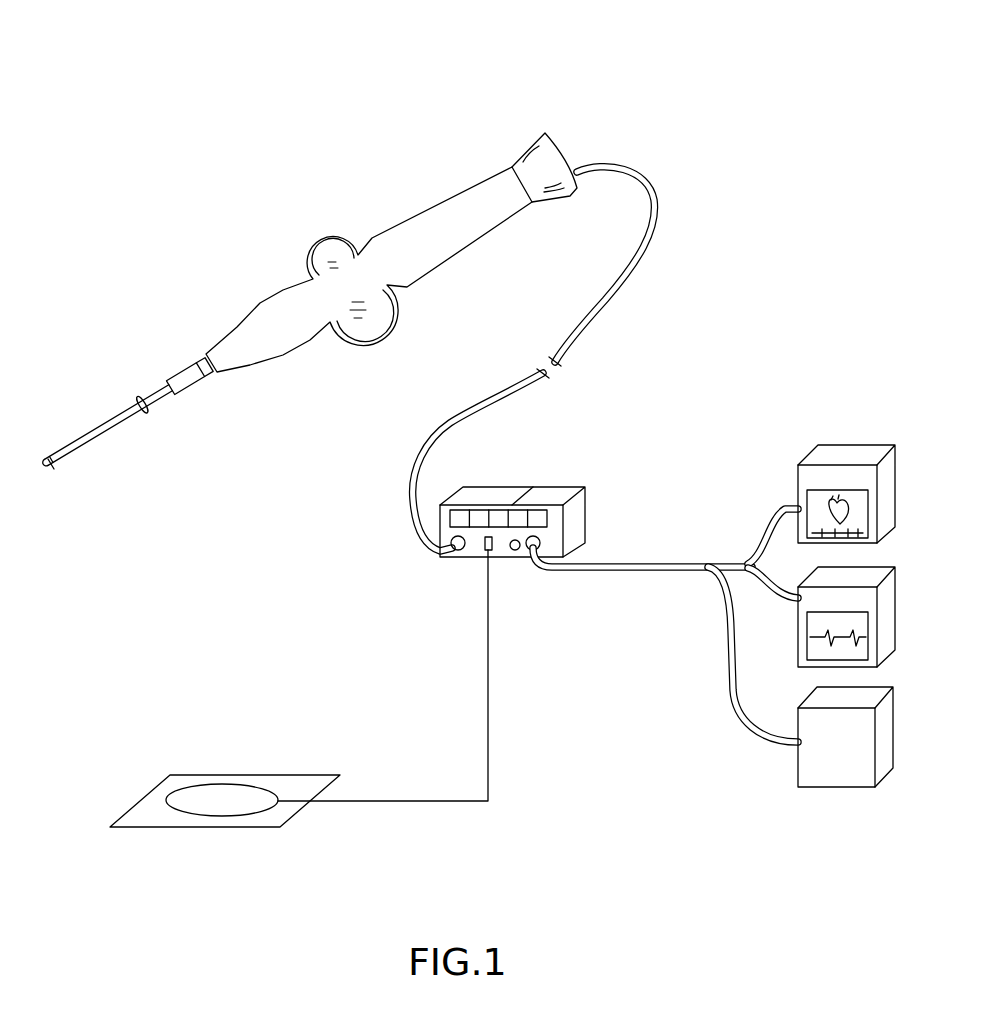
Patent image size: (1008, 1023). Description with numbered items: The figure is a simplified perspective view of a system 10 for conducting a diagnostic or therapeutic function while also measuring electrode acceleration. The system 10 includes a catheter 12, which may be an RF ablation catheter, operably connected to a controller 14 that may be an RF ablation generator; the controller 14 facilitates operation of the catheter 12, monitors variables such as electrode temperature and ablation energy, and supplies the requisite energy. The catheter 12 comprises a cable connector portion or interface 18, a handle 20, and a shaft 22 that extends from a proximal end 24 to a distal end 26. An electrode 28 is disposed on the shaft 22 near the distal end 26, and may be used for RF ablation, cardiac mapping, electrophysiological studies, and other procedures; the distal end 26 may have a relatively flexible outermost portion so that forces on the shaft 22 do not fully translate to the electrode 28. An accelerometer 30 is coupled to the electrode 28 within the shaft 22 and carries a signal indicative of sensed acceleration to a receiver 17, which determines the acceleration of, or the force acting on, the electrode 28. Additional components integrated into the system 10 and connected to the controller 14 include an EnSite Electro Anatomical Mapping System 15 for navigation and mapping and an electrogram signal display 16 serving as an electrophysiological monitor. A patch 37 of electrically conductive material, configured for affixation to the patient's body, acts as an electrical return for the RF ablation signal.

The system 10 is at (150, 87).
The catheter 12 is at (358, 178).
The controller 14 is at (543, 473).
The EnSite Electro Anatomical Mapping System 15 is at (847, 455).
The electrogram signal display 16 is at (797, 667).
The receiver 17 is at (798, 788).
The cable connector portion 18 is at (522, 152).
The handle 20 is at (433, 200).
The shaft 22 is at (143, 397).
The proximal end 24 is at (193, 411).
The distal end 26 is at (55, 484).
The electrode 28 is at (47, 458).
The accelerometer 30 is at (76, 479).
The patch 37 is at (238, 800).